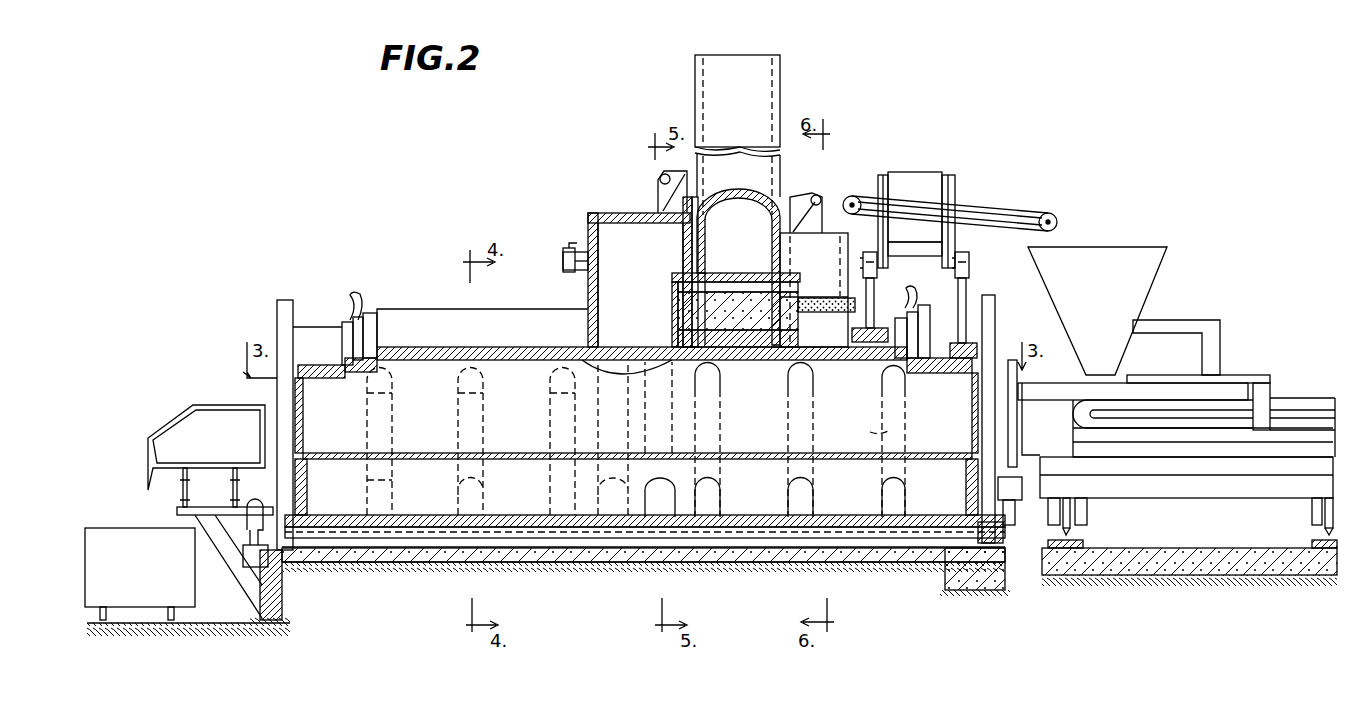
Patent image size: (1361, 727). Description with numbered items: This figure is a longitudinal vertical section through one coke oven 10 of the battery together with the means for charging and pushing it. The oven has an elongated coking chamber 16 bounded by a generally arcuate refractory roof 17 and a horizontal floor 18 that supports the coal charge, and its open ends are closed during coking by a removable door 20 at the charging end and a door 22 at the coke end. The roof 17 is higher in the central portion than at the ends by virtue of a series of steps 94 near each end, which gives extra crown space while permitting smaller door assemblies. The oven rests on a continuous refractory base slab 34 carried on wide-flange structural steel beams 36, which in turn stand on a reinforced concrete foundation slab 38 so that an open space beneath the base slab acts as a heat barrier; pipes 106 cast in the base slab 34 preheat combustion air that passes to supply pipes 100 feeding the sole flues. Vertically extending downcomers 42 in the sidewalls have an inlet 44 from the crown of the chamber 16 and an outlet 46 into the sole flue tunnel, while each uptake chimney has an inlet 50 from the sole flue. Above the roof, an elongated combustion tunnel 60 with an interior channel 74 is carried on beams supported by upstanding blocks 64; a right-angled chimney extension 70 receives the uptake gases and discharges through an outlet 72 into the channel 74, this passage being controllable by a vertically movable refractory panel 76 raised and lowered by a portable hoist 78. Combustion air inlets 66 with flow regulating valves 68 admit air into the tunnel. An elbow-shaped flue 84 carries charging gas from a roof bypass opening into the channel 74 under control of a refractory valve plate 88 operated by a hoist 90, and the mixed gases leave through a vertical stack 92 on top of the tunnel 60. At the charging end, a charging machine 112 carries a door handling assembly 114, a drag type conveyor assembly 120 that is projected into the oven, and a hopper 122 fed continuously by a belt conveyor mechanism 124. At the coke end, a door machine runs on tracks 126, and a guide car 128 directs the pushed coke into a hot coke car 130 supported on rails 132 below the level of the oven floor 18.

The coke oven 10 is at (444, 297).
The coking chamber 16 is at (519, 438).
The arcuate roof 17 is at (556, 320).
The floor 18 is at (445, 452).
The door 20 is at (1005, 380).
The door 22 is at (303, 392).
The base slab 34 is at (510, 515).
The structural steel beams 36 is at (498, 568).
The foundation slab 38 is at (398, 566).
The downcomers 42 is at (813, 432).
The downcomer inlet 44 is at (882, 377).
The downcomer outlet 46 is at (790, 488).
The chimney inlet 50 is at (676, 488).
The combustion tunnel 60 is at (760, 182).
The support blocks 64 is at (740, 315).
The combustion air inlet 66 is at (596, 262).
The flow regulating valve 68 is at (563, 261).
The chimney extension 70 is at (590, 232).
The outlet 72 is at (698, 259).
The interior channel 74 is at (730, 278).
The refractory panel 76 is at (683, 251).
The portable hoist 78 is at (647, 185).
The elbow-shaped flue 84 is at (838, 215).
The refractory valve plate 88 is at (800, 238).
The hoist 90 is at (819, 182).
The stack 92 is at (780, 60).
The steps 94 is at (912, 293).
The supply pipes 100 is at (307, 474).
The pipes 106 is at (690, 570).
The charging machine 112 is at (1206, 302).
The door handling assembly 114 is at (1030, 395).
The drag type conveyor assembly 120 is at (1298, 398).
The hopper 122 is at (1128, 255).
The belt conveyor mechanism 124 is at (925, 172).
The tracks 126 is at (235, 500).
The guide car 128 is at (194, 397).
The hot coke car 130 is at (133, 528).
The rails 132 is at (117, 630).